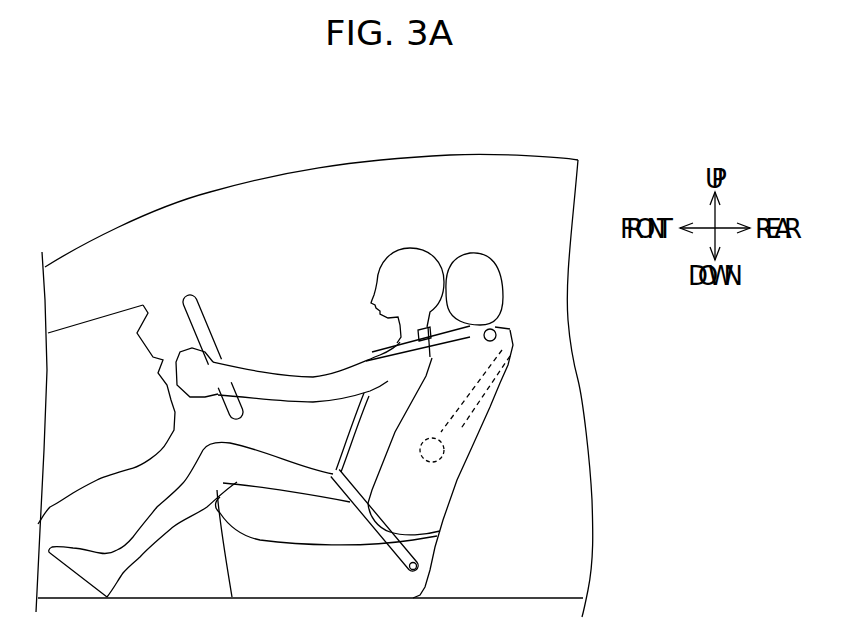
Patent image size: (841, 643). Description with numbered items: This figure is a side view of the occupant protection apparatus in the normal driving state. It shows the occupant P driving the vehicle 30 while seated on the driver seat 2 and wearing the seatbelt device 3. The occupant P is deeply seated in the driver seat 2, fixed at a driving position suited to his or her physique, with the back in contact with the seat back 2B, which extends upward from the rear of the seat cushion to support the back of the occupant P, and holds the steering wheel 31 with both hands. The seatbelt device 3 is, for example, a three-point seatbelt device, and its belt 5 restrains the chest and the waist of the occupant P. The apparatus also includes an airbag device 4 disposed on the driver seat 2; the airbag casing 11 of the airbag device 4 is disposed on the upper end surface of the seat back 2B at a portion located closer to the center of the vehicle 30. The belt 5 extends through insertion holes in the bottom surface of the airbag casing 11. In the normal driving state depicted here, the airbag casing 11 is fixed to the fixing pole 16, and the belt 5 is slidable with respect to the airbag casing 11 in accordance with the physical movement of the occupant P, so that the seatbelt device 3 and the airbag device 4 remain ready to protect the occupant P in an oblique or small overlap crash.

The vehicle 30 is at (357, 143).
The steering wheel 31 is at (193, 300).
The occupant P is at (405, 248).
The vehicle seat 2 is at (475, 237).
The seat back 2B is at (457, 462).
The airbag device 4 is at (513, 315).
The fixing pole 16 is at (500, 337).
The seatbelt device 3 is at (378, 343).
The airbag casing 11 is at (424, 329).
The belt 5 is at (347, 424).